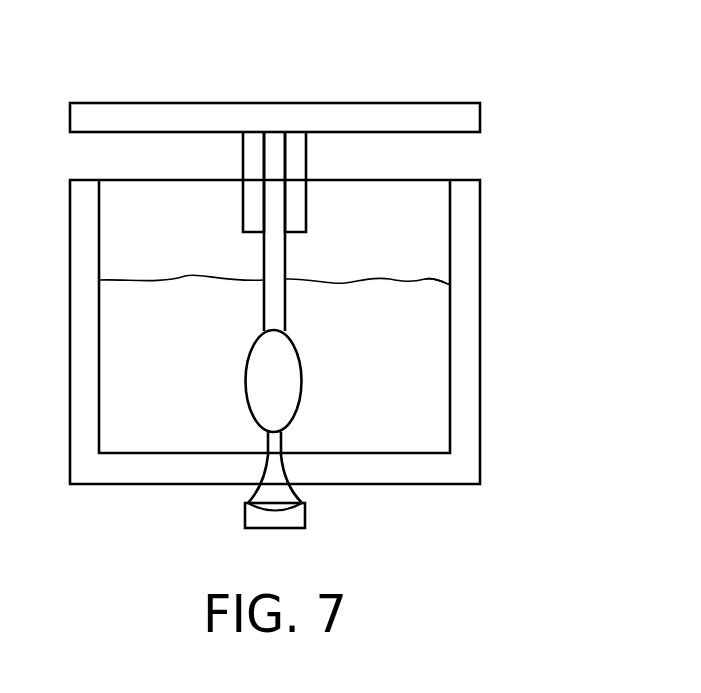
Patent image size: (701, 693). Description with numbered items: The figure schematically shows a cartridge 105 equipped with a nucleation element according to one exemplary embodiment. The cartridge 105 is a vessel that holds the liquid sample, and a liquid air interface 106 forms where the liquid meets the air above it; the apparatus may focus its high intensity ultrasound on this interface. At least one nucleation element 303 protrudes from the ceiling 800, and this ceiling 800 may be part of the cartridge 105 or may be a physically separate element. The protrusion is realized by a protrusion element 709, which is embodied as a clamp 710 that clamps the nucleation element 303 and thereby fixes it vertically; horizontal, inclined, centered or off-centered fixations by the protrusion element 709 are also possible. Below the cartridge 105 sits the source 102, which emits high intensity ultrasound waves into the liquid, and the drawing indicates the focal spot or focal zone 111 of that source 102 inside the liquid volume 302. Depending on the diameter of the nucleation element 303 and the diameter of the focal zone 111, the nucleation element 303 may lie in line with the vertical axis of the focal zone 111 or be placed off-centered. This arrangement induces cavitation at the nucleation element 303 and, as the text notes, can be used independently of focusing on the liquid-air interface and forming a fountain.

The ceiling 800 is at (411, 113).
The clamp 710 is at (243, 183).
The protrusion element 709 is at (328, 150).
The cartridge 105 is at (480, 383).
The liquid 302 is at (337, 367).
The nucleation element 303 is at (264, 262).
The liquid air interface 106 is at (448, 285).
The focal zone 111 is at (302, 383).
The source 102 is at (245, 513).